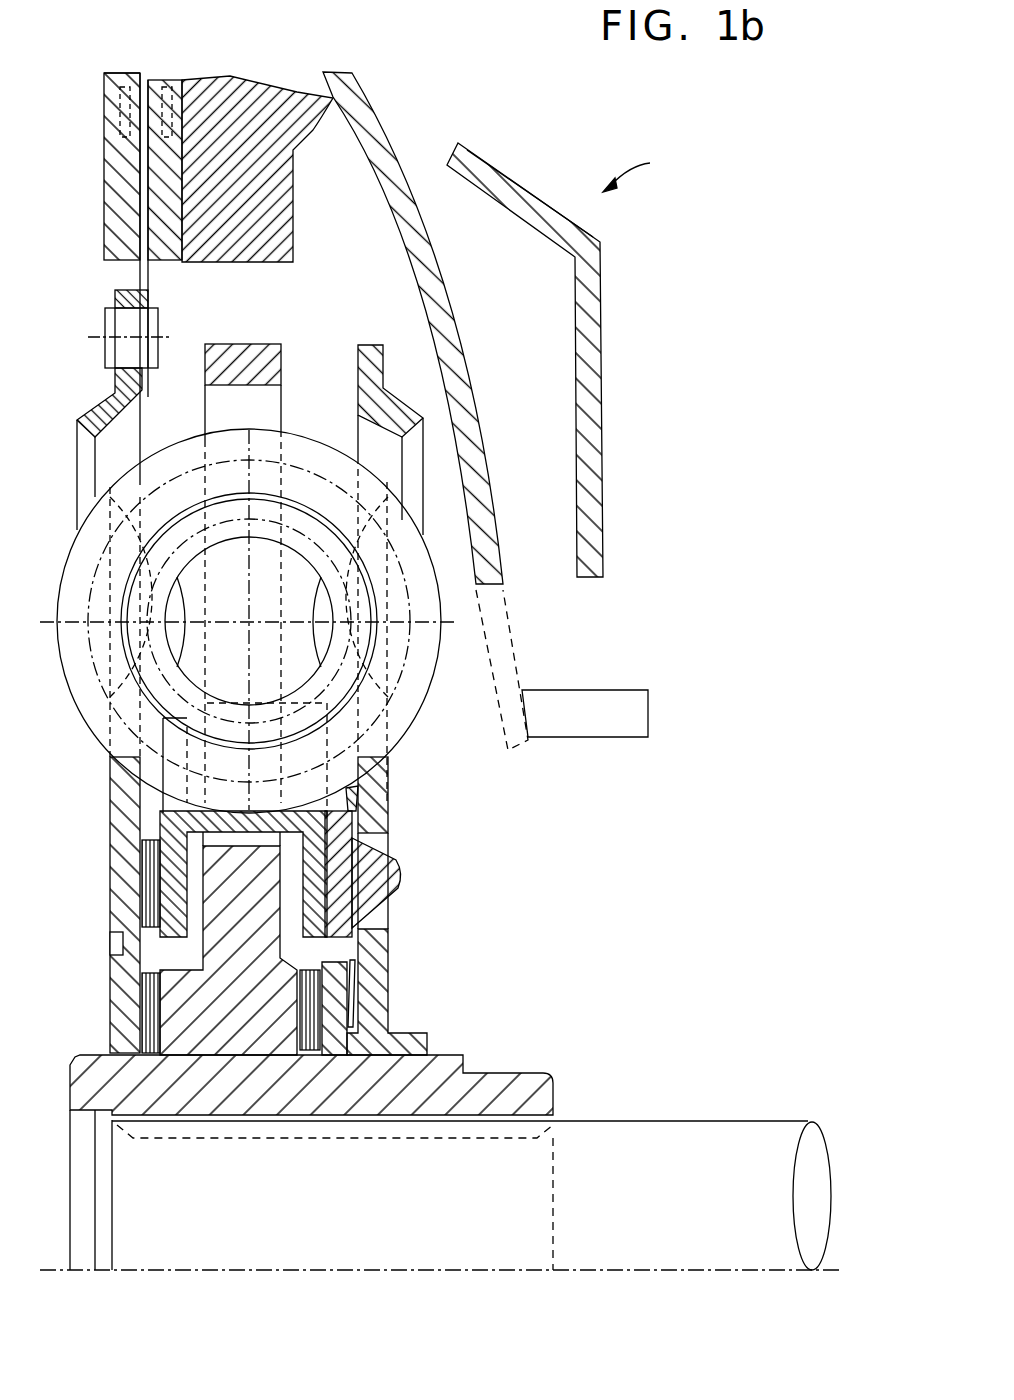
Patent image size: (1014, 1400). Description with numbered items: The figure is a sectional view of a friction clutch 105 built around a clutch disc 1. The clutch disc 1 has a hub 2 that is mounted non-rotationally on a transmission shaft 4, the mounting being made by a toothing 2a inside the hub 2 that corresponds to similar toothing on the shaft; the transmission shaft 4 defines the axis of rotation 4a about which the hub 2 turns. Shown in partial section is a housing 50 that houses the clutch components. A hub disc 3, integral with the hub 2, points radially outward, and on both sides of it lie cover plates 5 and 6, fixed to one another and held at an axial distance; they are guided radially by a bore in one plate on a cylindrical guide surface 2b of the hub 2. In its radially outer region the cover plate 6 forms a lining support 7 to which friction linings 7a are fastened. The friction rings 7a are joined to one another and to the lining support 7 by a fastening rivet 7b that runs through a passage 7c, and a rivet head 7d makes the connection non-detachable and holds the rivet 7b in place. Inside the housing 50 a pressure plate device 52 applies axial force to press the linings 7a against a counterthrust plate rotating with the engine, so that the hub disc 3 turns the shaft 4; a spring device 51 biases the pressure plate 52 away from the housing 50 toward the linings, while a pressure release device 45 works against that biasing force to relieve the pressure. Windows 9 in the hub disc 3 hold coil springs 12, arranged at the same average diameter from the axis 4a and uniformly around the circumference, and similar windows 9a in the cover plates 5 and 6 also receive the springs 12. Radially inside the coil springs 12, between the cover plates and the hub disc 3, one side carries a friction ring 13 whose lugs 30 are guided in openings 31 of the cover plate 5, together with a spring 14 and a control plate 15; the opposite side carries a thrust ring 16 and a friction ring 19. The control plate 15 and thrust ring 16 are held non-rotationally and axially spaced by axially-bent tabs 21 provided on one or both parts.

The clutch disc 1 is at (372, 332).
The hub 2 is at (215, 1093).
The toothing 2a is at (368, 1132).
The cylindrical guide surface 2b is at (120, 1053).
The hub disc 3 is at (232, 347).
The transmission shaft 4 is at (705, 1132).
The axis of rotation 4a is at (322, 1273).
The cover plate 5 is at (377, 395).
The cover plate 6 is at (93, 417).
The lining support 7 is at (107, 247).
The friction linings 7a is at (157, 183).
The fastening rivet 7b is at (123, 112).
The passage 7c is at (137, 87).
The rivet head 7d is at (173, 85).
The windows 9 is at (217, 405).
The windows 9a is at (107, 455).
The coil springs 12 is at (420, 670).
The friction ring 13 is at (393, 856).
The spring 14 is at (353, 785).
The control plate 15 is at (323, 947).
The thrust ring 16 is at (160, 875).
The friction ring 19 is at (140, 903).
The axially-bent tabs 21 is at (152, 790).
The lugs 30 is at (370, 887).
The openings 31 is at (380, 842).
The pressure release device 45 is at (611, 703).
The housing 50 is at (602, 356).
The spring device 51 is at (468, 435).
The pressure plate device 52 is at (277, 193).
The friction clutch 105 is at (650, 160).